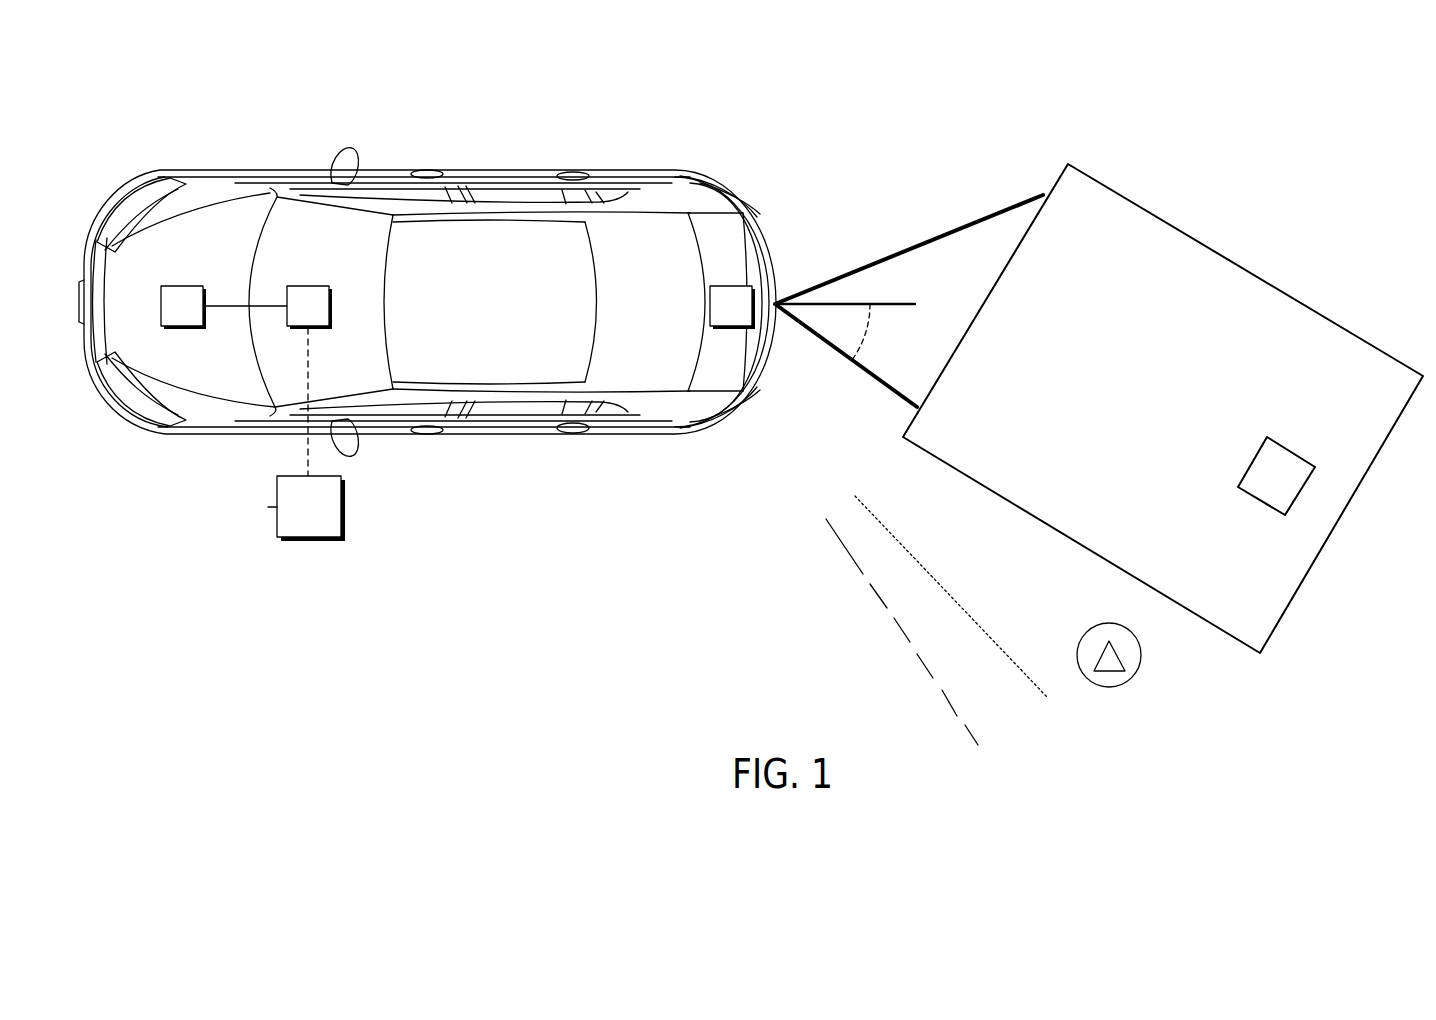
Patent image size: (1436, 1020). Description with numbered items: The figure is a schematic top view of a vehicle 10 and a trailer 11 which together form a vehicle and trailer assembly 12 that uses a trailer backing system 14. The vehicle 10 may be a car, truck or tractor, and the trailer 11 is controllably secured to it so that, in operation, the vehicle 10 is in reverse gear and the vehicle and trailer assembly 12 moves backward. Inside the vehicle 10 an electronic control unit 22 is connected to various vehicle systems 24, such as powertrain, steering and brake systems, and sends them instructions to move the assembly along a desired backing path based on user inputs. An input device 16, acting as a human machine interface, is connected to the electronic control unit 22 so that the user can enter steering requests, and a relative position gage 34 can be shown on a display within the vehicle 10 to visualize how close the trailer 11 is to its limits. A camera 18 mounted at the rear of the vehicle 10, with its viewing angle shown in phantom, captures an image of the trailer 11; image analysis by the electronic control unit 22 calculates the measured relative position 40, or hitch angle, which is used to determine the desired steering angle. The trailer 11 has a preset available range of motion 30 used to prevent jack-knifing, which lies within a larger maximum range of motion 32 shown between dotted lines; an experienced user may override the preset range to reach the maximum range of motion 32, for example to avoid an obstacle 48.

The vehicle 10 is at (220, 170).
The trailer 11 is at (1214, 251).
The vehicle and trailer assembly 12 is at (880, 212).
The trailer backing system 14 is at (476, 147).
The input device 16 is at (268, 507).
The camera 18 is at (719, 318).
The electronic control unit 22 is at (296, 318).
The vehicle systems 24 is at (170, 318).
The available range of motion 30 is at (1030, 680).
The maximum range of motion 32 is at (784, 431).
The relative position gage 34 is at (332, 507).
The relative position 40 is at (878, 338).
The obstacle 48 is at (1088, 630).